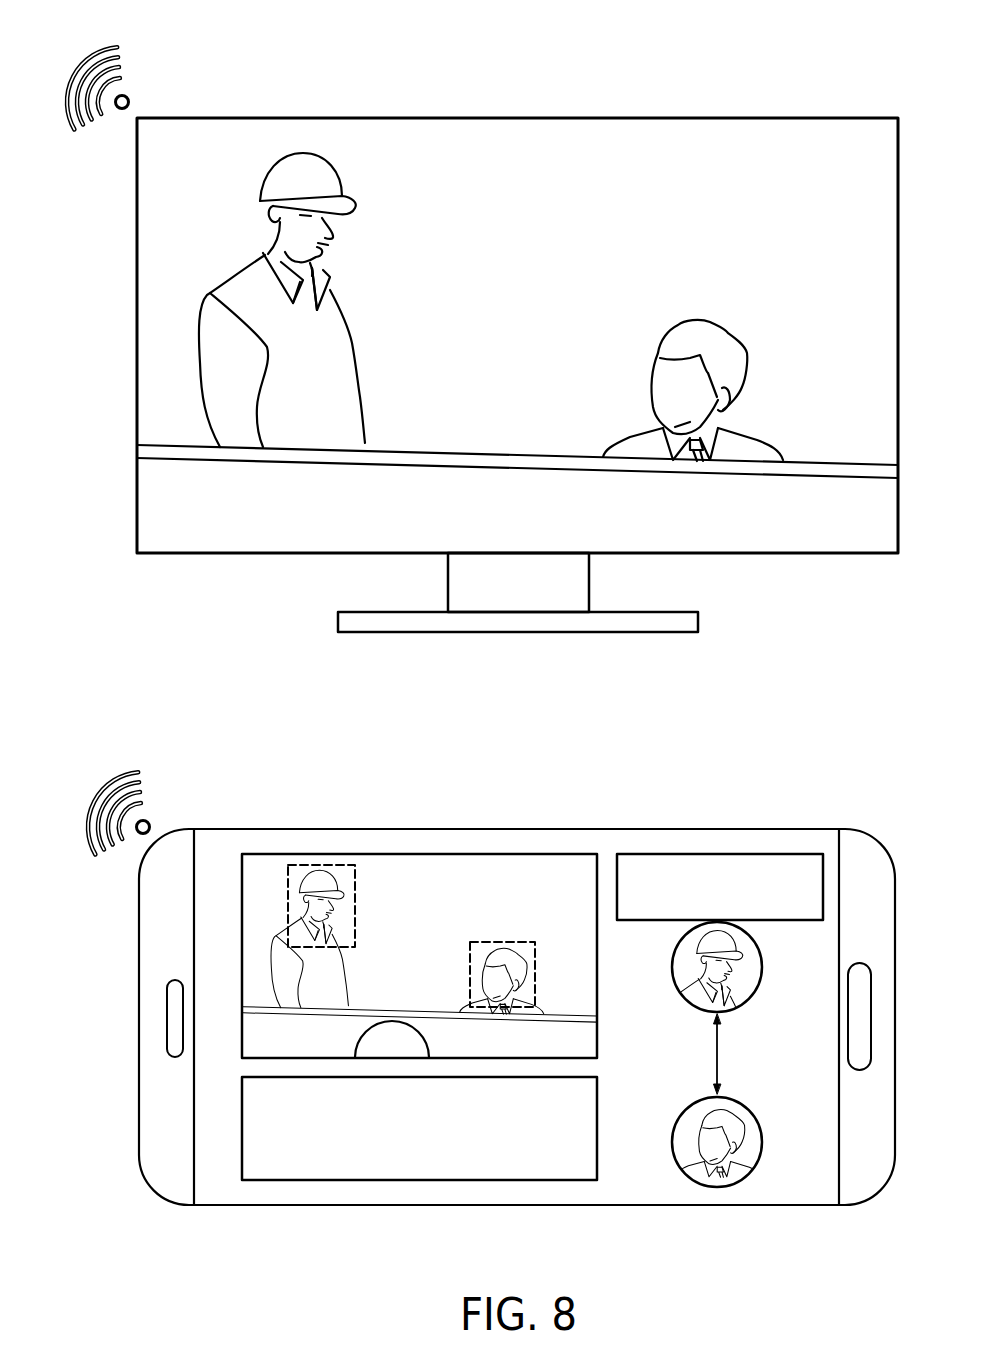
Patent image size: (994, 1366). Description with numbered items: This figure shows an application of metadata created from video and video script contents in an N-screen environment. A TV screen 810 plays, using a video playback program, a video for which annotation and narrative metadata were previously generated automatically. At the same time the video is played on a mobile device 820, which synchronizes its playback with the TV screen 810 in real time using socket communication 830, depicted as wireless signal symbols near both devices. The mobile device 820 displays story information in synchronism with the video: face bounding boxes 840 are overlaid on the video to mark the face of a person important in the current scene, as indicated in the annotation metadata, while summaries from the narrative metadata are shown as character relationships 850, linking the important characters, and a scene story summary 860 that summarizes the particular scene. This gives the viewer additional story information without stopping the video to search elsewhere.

The TV screen 810 is at (248, 117).
The mobile device 820 is at (237, 829).
The socket communication 830 is at (90, 53).
The face bounding boxes 840 is at (357, 918).
The character relationships 850 is at (710, 853).
The scene story summary 860 is at (420, 1180).